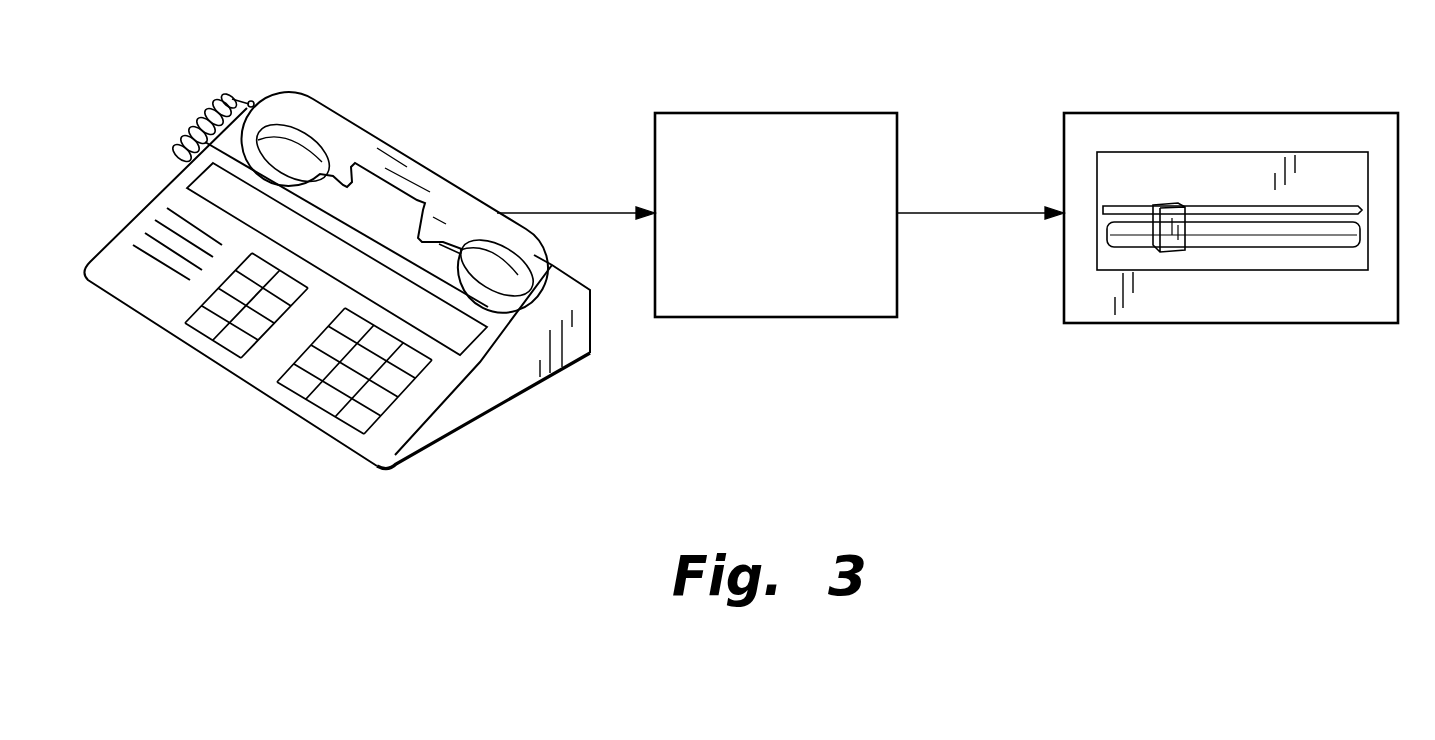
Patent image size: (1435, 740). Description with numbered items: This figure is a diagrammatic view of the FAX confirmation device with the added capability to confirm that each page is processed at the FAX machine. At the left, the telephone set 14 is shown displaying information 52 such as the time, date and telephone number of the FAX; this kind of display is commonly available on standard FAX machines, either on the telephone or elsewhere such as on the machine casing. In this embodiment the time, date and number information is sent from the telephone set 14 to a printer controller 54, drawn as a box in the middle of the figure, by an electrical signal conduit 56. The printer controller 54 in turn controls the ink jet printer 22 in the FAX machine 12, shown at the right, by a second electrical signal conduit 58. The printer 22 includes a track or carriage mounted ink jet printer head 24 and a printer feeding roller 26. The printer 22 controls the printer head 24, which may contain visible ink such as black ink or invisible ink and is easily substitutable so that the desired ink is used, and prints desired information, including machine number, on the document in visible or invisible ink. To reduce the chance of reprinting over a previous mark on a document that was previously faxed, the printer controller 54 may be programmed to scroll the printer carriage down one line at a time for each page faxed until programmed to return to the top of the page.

The FAX machine 12 is at (1231, 207).
The telephonic device 14 is at (343, 294).
The ink jet printer 22 is at (1337, 207).
The ink jet printer head 24 is at (1167, 205).
The printer feeding roller 26 is at (1294, 230).
The information 52 is at (473, 333).
The printer controller 54 is at (788, 113).
The electrical signal conduit 56 is at (592, 213).
The electrical signal conduit 58 is at (966, 213).